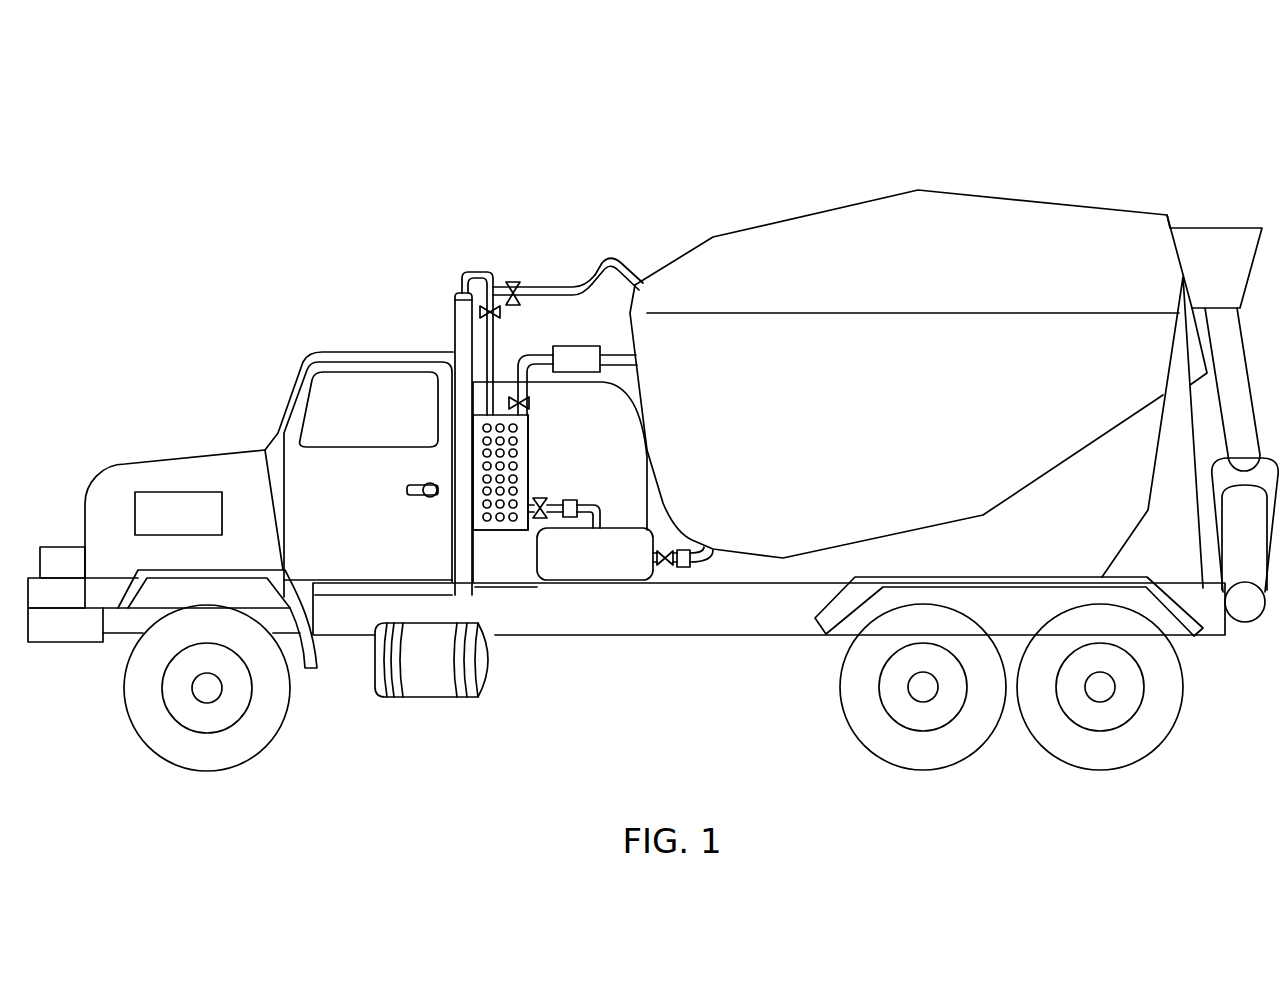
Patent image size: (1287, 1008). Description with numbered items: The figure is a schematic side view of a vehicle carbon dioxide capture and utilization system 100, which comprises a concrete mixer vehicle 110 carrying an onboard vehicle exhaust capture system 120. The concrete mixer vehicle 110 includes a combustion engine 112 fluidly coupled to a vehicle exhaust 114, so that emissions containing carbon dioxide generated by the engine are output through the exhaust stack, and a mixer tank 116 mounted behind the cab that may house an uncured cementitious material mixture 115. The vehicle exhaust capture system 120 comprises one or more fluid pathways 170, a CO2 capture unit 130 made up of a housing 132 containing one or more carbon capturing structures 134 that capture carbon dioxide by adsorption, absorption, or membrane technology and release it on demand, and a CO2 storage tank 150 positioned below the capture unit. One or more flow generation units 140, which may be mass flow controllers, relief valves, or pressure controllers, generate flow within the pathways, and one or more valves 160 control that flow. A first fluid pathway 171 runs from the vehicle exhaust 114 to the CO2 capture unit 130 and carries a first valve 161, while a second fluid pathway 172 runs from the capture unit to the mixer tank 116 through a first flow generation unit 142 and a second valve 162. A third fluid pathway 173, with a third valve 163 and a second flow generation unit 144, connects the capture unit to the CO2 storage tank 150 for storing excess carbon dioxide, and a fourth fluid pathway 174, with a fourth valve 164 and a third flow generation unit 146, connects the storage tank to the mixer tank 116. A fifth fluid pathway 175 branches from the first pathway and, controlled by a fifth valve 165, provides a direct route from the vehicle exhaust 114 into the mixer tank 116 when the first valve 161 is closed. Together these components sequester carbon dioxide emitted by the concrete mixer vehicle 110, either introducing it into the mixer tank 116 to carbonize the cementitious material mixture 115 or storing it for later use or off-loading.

The vehicle CO2 capture and utilization system 100 is at (1170, 150).
The concrete mixer vehicle 110 is at (881, 179).
The combustion engine 112 is at (162, 492).
The vehicle exhaust 114 is at (455, 330).
The cementitious material mixture 115 is at (872, 313).
The mixer tank 116 is at (998, 198).
The vehicle exhaust capture system 120 is at (640, 238).
The CO2 capture unit 130 is at (495, 540).
The housing 132 is at (530, 531).
The carbon capturing structures 134 is at (527, 441).
The flow generation units 140 is at (612, 347).
The first flow generation unit 142 is at (603, 345).
The second flow generation unit 144 is at (572, 500).
The third flow generation unit 146 is at (683, 568).
The CO2 storage tank 150 is at (623, 580).
The valves 160 is at (503, 280).
The first valve 161 is at (500, 312).
The second valve 162 is at (530, 403).
The third valve 163 is at (548, 513).
The fourth valve 164 is at (668, 548).
The fifth valve 165 is at (523, 287).
The fluid pathways 170 is at (483, 264).
The first fluid pathway 171 is at (477, 272).
The second fluid pathway 172 is at (524, 352).
The third fluid pathway 173 is at (541, 498).
The fourth fluid pathway 174 is at (710, 560).
The fifth fluid pathway 175 is at (600, 262).